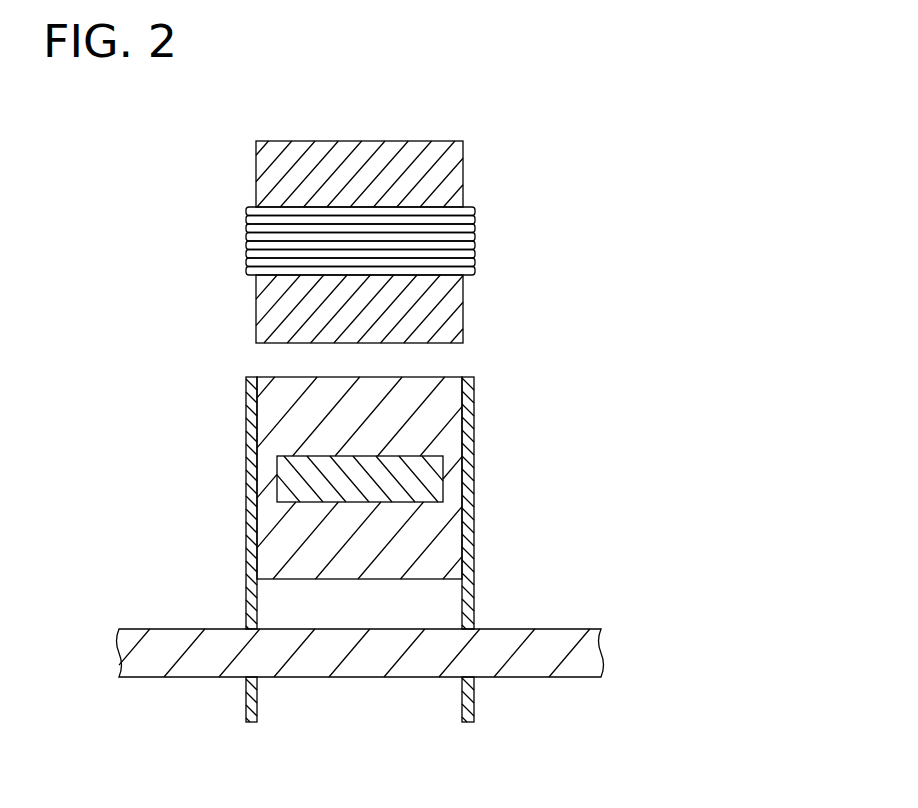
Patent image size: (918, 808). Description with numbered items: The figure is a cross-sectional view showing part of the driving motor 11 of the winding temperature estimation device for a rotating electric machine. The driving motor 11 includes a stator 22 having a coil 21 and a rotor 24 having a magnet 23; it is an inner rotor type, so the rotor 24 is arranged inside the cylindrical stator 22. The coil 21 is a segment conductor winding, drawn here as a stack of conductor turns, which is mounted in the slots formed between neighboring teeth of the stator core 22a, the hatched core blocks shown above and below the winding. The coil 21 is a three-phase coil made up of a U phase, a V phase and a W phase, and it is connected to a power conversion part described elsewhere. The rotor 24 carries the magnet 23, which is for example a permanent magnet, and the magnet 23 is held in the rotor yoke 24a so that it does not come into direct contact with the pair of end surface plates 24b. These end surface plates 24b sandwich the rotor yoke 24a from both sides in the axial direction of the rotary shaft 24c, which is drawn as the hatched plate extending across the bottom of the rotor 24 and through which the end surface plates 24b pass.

The driving motor 11 is at (718, 111).
The coil 21 is at (475, 223).
The stator 22 is at (600, 159).
The stator core 22a is at (463, 151).
The magnet 23 is at (443, 478).
The rotor 24 is at (600, 419).
The rotor yoke 24a is at (443, 545).
The end surface plates 24b is at (245, 395).
The rotary shaft 24c is at (568, 628).